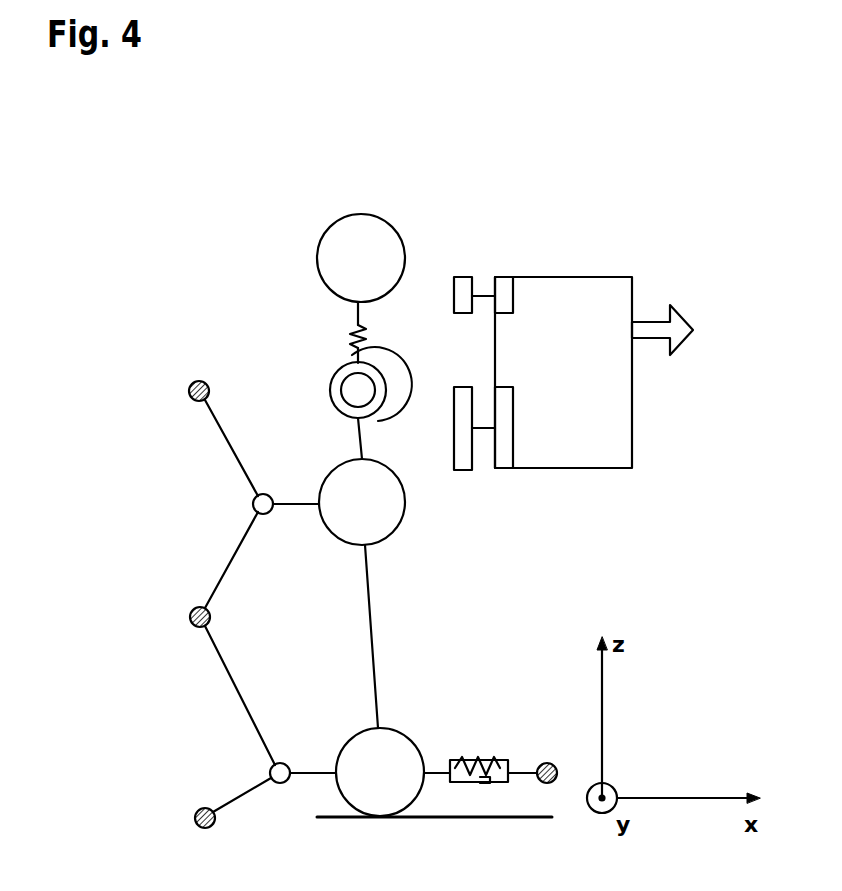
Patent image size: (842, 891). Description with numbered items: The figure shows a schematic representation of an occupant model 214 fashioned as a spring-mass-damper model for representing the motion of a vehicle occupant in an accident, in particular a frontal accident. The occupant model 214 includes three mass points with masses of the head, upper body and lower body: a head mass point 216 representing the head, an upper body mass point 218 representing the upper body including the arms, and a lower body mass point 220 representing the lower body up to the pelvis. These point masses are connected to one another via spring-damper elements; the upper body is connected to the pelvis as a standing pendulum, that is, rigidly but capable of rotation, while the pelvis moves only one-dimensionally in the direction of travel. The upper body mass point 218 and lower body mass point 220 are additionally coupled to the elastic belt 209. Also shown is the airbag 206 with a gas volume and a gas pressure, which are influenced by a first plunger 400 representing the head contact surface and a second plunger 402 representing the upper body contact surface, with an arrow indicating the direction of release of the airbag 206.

The occupant model 214 is at (230, 270).
The head mass point 216 is at (403, 242).
The upper body mass point 218 is at (398, 532).
The lower body mass point 220 is at (405, 738).
The belt 209 is at (230, 442).
The airbag 206 is at (632, 428).
The first plunger 400 is at (462, 283).
The second plunger 402 is at (465, 460).